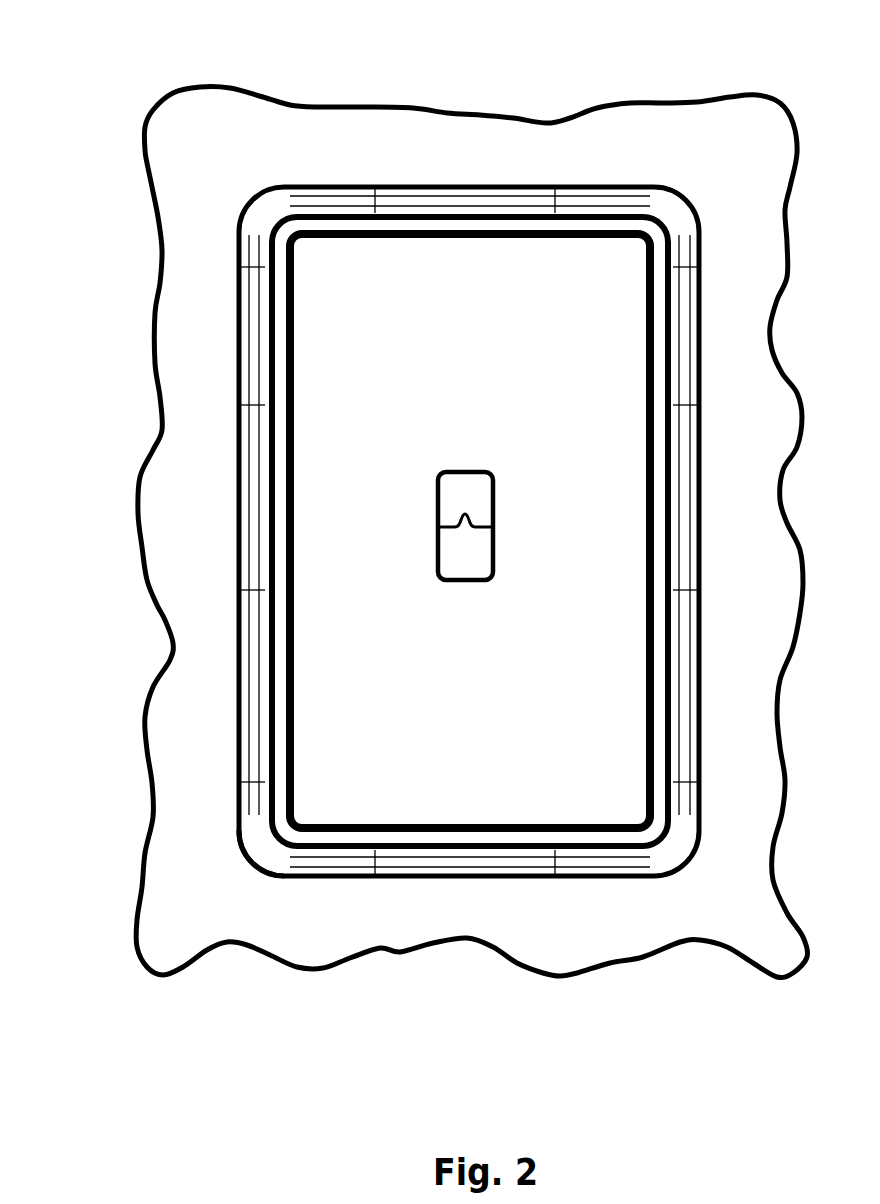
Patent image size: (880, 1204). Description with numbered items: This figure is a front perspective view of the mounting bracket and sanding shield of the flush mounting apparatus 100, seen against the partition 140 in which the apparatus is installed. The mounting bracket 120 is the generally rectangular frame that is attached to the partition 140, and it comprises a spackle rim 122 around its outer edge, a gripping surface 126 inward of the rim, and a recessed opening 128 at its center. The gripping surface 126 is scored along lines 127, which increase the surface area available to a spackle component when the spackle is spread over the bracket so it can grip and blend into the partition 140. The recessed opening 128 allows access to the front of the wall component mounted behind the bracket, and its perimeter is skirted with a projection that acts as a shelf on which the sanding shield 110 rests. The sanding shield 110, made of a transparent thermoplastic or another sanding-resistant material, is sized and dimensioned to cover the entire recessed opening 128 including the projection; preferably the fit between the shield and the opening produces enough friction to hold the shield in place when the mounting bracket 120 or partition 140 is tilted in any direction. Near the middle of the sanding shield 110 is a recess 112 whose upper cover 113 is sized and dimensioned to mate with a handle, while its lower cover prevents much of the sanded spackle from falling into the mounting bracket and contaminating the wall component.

The flush mounting apparatus 100 is at (118, 75).
The sanding shield 110 is at (343, 214).
The recess 112 is at (437, 573).
The upper cover 113 is at (468, 513).
The mounting bracket 120 is at (264, 191).
The spackle rim 122 is at (353, 845).
The gripping surface 126 is at (270, 872).
The lines 127 is at (427, 193).
The recessed opening 128 is at (225, 245).
The partition 140 is at (145, 160).